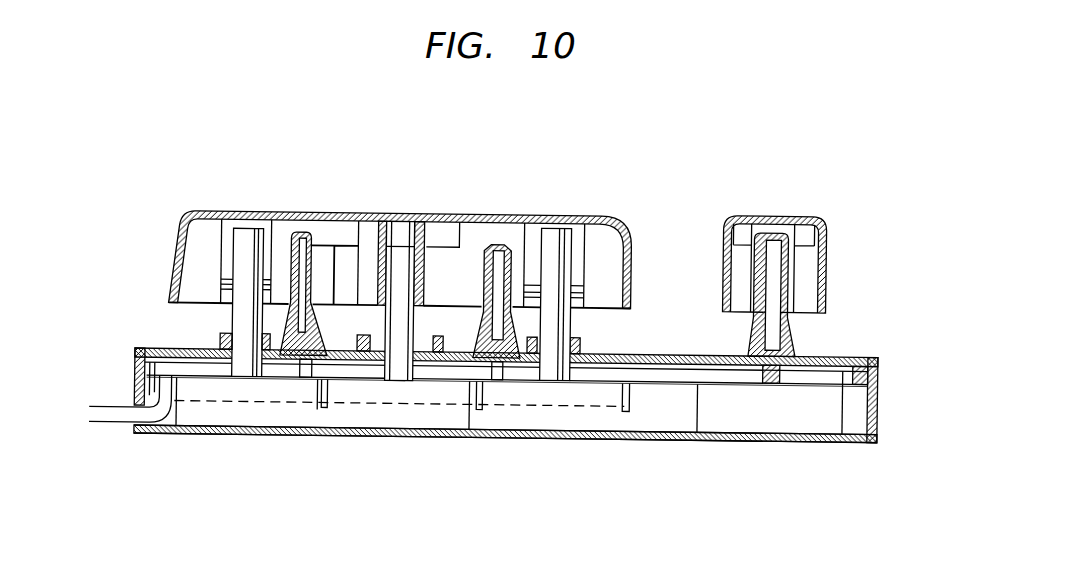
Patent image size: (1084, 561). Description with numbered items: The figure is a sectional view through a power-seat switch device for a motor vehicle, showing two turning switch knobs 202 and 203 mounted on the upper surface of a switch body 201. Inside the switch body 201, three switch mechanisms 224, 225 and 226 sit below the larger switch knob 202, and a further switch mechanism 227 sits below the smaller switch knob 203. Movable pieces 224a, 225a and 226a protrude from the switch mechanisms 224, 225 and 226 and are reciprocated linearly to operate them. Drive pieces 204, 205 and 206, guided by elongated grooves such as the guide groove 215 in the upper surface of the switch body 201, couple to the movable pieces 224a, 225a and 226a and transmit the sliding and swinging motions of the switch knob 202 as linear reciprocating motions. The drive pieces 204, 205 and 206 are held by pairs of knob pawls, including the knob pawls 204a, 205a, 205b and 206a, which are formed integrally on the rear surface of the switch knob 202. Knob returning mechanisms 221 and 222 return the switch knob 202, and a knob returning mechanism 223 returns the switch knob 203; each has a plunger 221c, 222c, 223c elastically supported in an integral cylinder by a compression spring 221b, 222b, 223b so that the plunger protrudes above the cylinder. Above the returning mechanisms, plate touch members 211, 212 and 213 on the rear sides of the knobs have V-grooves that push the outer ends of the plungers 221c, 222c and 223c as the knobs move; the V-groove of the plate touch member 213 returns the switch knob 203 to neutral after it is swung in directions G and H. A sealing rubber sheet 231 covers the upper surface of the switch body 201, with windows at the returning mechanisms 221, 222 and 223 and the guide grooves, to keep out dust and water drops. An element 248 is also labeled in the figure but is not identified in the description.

The switch body 201 is at (135, 350).
The switch knob 202 is at (180, 214).
The switch knob 203 is at (797, 213).
The drive piece 204 is at (240, 226).
The knob pawl 204a is at (223, 212).
The drive piece 205 is at (387, 300).
The knob pawl 205a is at (400, 243).
The knob pawl 205b is at (425, 300).
The drive piece 206 is at (560, 224).
The knob pawl 206a is at (580, 247).
The plate touch member 211 is at (308, 210).
The plate touch member 212 is at (495, 238).
The plate touch member 213 is at (740, 228).
The guide groove 215 is at (377, 353).
The knob returning mechanism 221 is at (326, 293).
The compression spring 221b is at (312, 362).
The plunger 221c is at (327, 240).
The knob returning mechanism 222 is at (474, 289).
The compression spring 222b is at (497, 390).
The plunger 222c is at (548, 240).
The knob returning mechanism 223 is at (753, 325).
The compression spring 223b is at (797, 337).
The plunger 223c is at (776, 228).
The switch mechanism 224 is at (253, 412).
The movable piece 224a is at (227, 377).
The switch mechanism 225 is at (420, 432).
The movable piece 225a is at (399, 378).
The switch mechanism 226 is at (585, 420).
The movable piece 226a is at (535, 362).
The switch mechanism 227 is at (772, 425).
The sealing rubber sheet 231 is at (662, 356).
The threads 248 is at (219, 280).